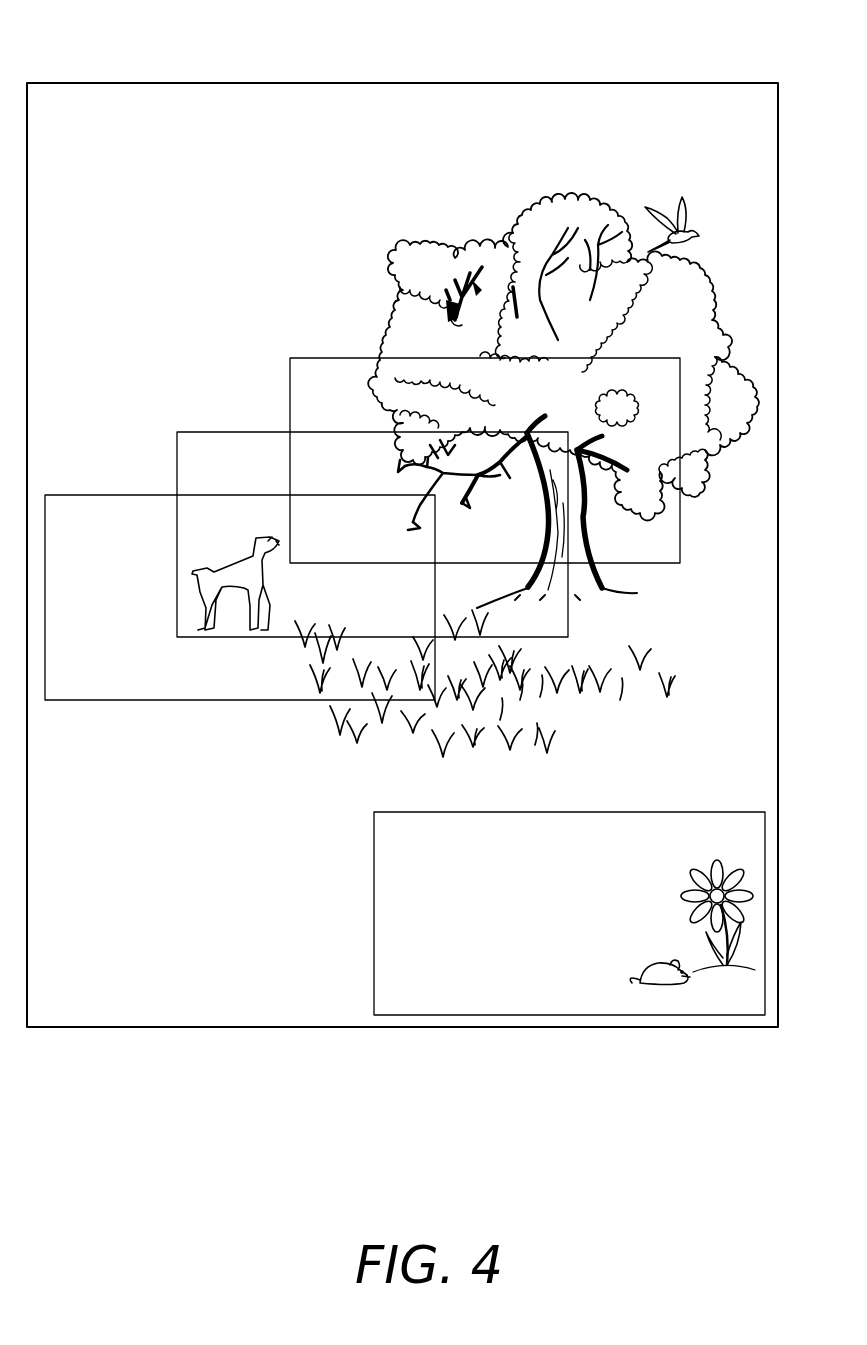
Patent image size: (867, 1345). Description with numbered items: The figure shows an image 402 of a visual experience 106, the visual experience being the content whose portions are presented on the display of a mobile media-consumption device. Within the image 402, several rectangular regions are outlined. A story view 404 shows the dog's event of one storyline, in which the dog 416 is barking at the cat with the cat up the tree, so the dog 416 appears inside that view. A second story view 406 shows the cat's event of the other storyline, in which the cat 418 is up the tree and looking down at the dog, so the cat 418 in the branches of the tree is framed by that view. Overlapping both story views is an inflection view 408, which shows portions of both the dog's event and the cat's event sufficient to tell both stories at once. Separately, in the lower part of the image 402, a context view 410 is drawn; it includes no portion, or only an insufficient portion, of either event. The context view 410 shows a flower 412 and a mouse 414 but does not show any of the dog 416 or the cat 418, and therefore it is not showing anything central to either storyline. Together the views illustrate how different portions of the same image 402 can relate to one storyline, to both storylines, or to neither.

The visual experience 106 is at (713, 83).
The image 402 is at (155, 121).
The story view 404 is at (210, 690).
The story view 406 is at (328, 358).
The inflection view 408 is at (258, 432).
The context view 410 is at (568, 843).
The flower 412 is at (662, 910).
The mouse 414 is at (624, 957).
The dog 416 is at (195, 533).
The cat 418 is at (463, 497).